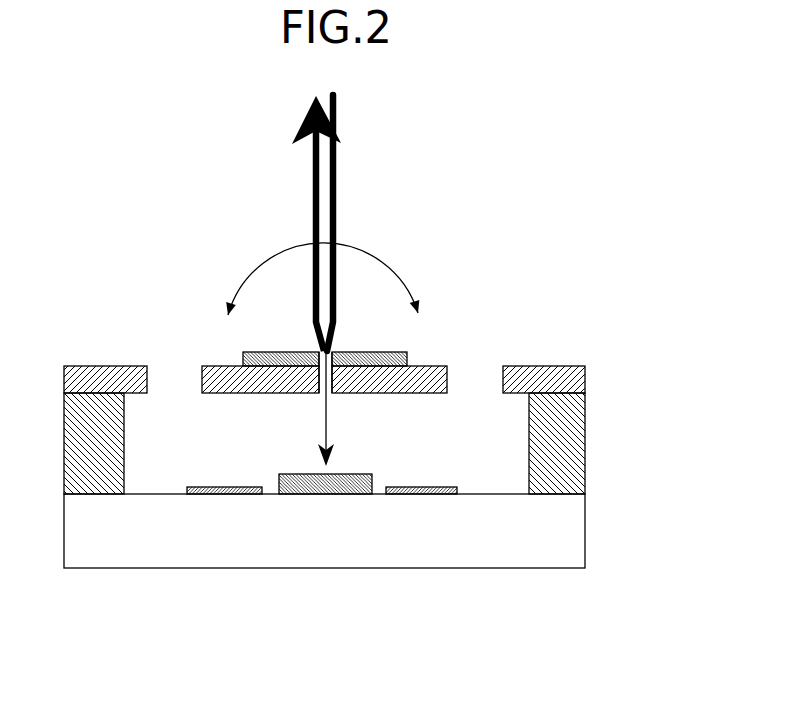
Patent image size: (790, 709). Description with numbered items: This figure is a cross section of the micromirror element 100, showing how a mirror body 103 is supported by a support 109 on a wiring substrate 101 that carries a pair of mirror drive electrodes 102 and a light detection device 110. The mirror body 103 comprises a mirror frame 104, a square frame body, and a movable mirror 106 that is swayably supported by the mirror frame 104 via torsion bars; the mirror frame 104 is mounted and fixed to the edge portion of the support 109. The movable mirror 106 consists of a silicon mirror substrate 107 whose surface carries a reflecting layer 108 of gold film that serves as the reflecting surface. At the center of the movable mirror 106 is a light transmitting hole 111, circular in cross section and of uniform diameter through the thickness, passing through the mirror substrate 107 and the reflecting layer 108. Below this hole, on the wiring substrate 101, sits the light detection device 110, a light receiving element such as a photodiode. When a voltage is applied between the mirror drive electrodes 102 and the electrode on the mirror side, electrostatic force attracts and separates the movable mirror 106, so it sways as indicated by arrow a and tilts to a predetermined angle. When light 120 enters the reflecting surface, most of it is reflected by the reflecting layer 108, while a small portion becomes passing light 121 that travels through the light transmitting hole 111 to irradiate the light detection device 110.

The micromirror element 100 is at (471, 269).
The wiring substrate 101 is at (570, 528).
The mirror drive electrodes 102 is at (422, 494).
The mirror body 103 is at (127, 262).
The mirror frame 104 is at (102, 367).
The movable mirror 106 is at (200, 272).
The mirror substrate 107 is at (210, 367).
The reflecting layer 108 is at (253, 352).
The support 109 is at (570, 450).
The light detection device 110 is at (355, 476).
The light transmitting hole 111 is at (334, 349).
The light 120 is at (337, 176).
The passing light 121 is at (320, 408).
The arrow A a is at (388, 260).